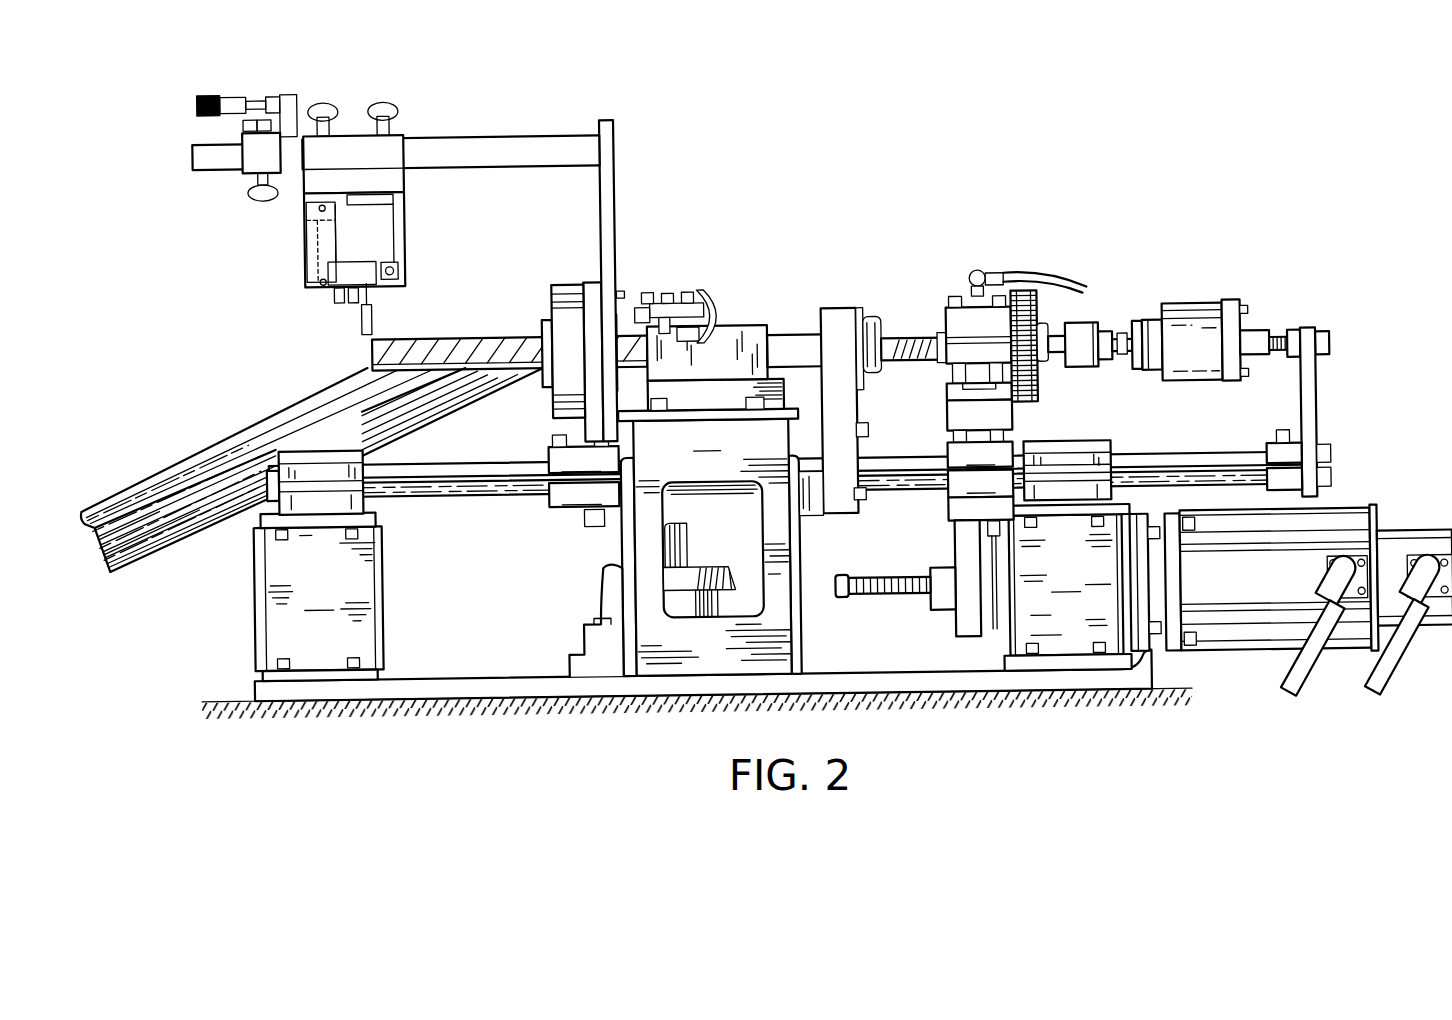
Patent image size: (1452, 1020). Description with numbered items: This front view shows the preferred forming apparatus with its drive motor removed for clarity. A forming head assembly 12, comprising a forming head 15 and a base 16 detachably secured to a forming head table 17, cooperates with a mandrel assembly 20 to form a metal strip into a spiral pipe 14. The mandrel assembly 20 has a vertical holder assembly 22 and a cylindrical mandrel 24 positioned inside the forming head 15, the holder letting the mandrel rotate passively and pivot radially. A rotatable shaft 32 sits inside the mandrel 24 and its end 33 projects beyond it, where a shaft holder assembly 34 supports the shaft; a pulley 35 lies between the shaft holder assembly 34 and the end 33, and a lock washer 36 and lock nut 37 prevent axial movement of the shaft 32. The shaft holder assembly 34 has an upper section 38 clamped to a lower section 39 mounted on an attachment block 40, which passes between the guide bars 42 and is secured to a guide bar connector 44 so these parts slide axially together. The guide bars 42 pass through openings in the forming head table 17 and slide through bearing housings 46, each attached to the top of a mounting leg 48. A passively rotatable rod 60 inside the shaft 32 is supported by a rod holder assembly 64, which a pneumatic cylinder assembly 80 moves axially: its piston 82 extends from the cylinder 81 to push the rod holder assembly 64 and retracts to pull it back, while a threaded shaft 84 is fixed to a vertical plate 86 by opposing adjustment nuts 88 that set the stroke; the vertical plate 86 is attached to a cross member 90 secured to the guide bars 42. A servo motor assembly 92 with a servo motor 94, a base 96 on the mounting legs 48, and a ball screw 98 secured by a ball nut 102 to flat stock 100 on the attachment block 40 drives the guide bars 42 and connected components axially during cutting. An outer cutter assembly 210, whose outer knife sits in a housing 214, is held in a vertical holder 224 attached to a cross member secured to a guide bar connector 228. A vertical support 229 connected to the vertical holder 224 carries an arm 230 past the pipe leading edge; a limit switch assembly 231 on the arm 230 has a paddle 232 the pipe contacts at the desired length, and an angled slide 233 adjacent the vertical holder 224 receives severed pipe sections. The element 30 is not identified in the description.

The forming head assembly 12 is at (736, 319).
The spiral pipe 14 is at (518, 335).
The forming head 15 is at (750, 326).
The base 16 is at (788, 382).
The forming head table 17 is at (684, 543).
The mandrel assembly 20 is at (830, 291).
The vertical holder assembly 22 is at (855, 310).
The cylindrical mandrel 24 is at (785, 336).
The apparatus 30 is at (805, 226).
The rotatable shaft 32 is at (907, 341).
The end of shaft 33 is at (1048, 354).
The shaft holder assembly 34 is at (949, 308).
The pulley 35 is at (1027, 295).
The lock washer 36 is at (1042, 367).
The lock nut 37 is at (1043, 339).
The upper section 38 is at (949, 313).
The lower section 39 is at (947, 396).
The attachment block 40 is at (947, 419).
The guide bars 42 is at (503, 497).
The guide bar connector 44 is at (981, 481).
The bearing housings 46 is at (387, 446).
The mounting leg 48 is at (692, 591).
The passively rotatable rod 60 is at (1053, 345).
The rod holder assembly 64 is at (1103, 322).
The pneumatic cylinder assembly 80 is at (1201, 301).
The cylinder 81 is at (1157, 316).
The piston 82 is at (1123, 358).
The threaded shaft 84 is at (1278, 340).
The vertical plate 86 is at (1318, 412).
The adjustment nuts 88 is at (1322, 338).
The cross member 90 is at (1281, 438).
The servo motor assembly 92 is at (1343, 513).
The servo motor 94 is at (1373, 514).
The base 96 is at (1160, 658).
The ball screw 98 is at (876, 600).
The flat stock 100 is at (968, 630).
The ball nut 102 is at (945, 610).
The outer cutter assembly 210 is at (566, 282).
The housing 214 is at (547, 315).
The vertical holder 224 is at (598, 281).
The guide bar connector 228 is at (583, 480).
The vertical support 229 is at (620, 165).
The arm 230 is at (485, 134).
The limit switch assembly 231 is at (409, 236).
The paddle 232 is at (365, 322).
The slide 233 is at (222, 455).